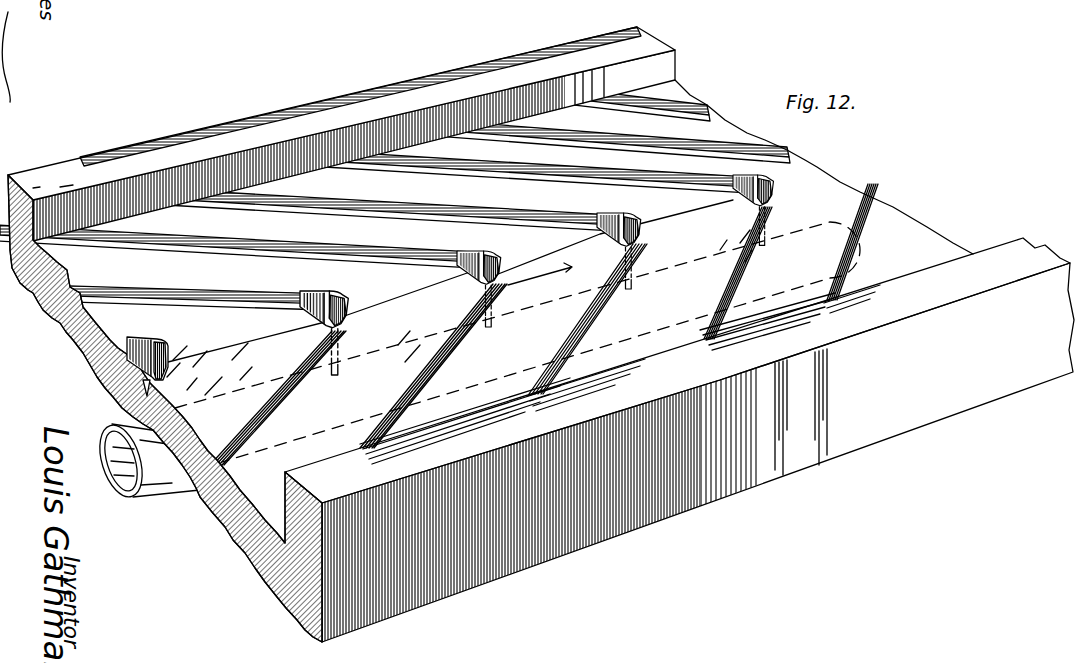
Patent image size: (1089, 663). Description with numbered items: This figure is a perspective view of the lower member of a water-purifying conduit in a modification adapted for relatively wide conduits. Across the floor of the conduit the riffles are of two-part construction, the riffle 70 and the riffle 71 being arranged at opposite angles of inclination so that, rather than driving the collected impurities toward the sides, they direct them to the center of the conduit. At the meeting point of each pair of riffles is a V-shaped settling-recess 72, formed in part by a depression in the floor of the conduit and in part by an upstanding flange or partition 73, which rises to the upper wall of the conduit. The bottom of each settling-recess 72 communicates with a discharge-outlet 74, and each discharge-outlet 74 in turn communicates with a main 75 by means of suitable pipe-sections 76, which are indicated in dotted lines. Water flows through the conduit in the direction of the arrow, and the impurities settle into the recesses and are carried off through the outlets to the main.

The riffle 70 is at (170, 300).
The riffle 71 is at (290, 372).
The V-shaped settling-recess 72 is at (133, 372).
The upstanding flange or partition 73 is at (136, 338).
The discharge-outlet 74 is at (137, 395).
The main 75 is at (158, 487).
The pipe-sections 76 is at (354, 347).